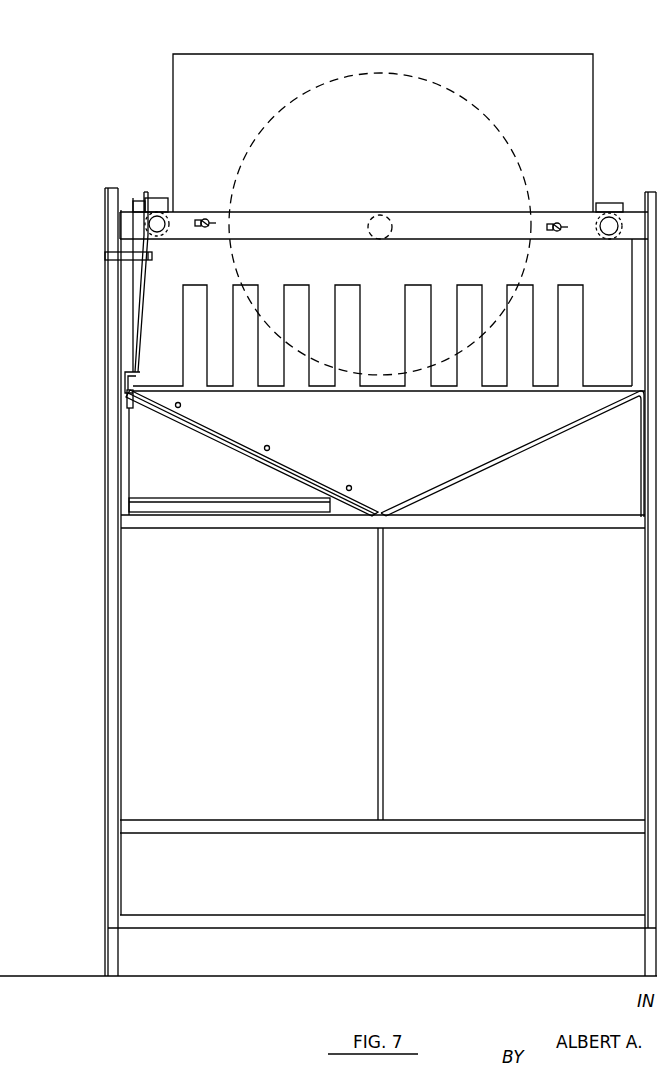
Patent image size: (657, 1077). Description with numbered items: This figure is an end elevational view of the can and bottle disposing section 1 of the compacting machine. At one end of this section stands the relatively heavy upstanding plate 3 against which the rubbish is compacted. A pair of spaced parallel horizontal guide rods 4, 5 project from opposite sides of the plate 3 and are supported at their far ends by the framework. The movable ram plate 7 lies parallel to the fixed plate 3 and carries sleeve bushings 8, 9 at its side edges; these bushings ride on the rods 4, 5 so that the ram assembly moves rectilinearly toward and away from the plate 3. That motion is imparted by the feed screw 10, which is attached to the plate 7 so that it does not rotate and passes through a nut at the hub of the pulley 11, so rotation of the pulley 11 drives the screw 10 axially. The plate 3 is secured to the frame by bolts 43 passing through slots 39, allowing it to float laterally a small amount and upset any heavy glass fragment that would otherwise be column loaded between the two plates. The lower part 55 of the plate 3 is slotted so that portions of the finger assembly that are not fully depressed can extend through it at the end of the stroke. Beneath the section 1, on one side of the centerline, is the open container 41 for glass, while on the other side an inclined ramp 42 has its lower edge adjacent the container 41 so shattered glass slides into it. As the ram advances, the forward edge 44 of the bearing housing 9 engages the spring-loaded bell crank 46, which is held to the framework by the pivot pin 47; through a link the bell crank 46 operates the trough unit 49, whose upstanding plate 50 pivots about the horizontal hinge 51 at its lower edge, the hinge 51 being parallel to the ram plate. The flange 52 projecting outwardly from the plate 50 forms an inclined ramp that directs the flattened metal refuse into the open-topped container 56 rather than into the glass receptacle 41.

The section for disposing of cans and bottles 1 is at (88, 612).
The upstanding plate 3 is at (497, 56).
The guide rod 4 is at (611, 233).
The guide rod 5 is at (160, 230).
The ram plate 7 is at (381, 225).
The sleeve bushing 8 is at (610, 205).
The sleeve bushing 9 is at (133, 198).
The feed screw 10 is at (392, 212).
The pulley 11 is at (278, 112).
The slot 39 is at (207, 228).
The open container 41 is at (268, 698).
The inclined ramp 42 is at (548, 437).
The bolt 43 is at (205, 219).
The forward edge of bearing housing 44 is at (155, 200).
The bell crank 46 is at (142, 305).
The pivot pin 47 is at (104, 256).
The trough unit 49 is at (124, 455).
The upstanding plate 50 is at (402, 413).
The horizontal hinge 51 is at (198, 500).
The flange 52 is at (248, 448).
The slotted lower part 55 is at (495, 388).
The open-topped container 56 is at (528, 698).